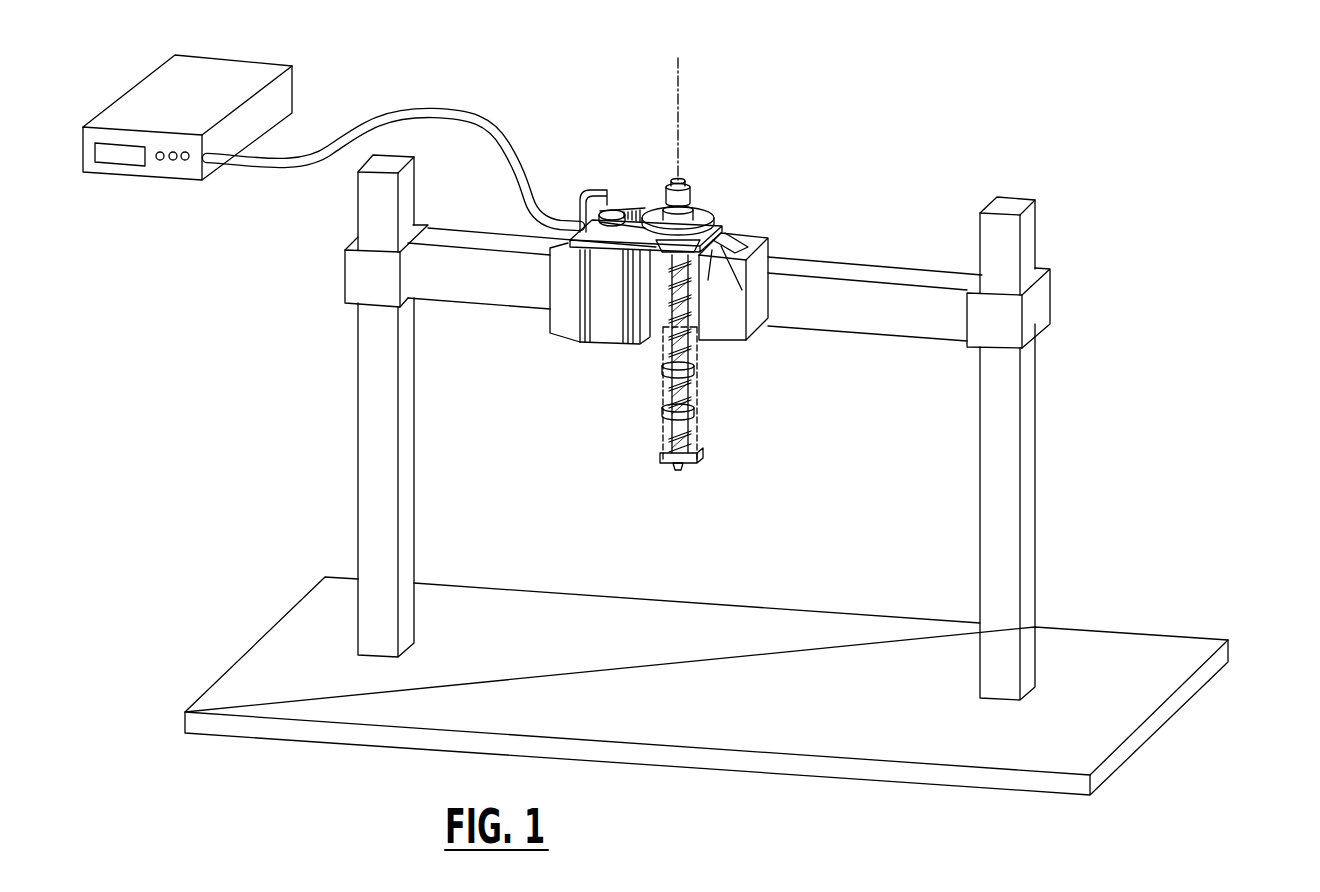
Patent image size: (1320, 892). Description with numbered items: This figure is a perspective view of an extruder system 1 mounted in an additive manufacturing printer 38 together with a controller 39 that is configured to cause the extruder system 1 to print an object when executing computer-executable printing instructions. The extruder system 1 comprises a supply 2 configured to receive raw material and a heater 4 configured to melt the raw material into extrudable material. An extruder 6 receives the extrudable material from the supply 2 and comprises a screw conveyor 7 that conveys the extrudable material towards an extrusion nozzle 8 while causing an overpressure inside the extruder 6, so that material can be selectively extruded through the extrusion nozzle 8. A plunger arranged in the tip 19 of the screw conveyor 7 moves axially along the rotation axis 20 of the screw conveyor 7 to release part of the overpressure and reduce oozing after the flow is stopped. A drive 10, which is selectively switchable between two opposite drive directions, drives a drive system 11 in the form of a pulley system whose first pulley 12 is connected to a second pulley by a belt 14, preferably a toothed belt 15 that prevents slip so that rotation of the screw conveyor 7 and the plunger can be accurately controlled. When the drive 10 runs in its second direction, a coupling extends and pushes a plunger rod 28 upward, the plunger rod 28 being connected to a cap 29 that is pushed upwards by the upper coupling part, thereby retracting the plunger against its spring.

The extruder system 1 is at (689, 295).
The supply 2 is at (721, 260).
The heater 4 is at (663, 352).
The extruder 6 is at (697, 352).
The screw conveyor 7 is at (682, 397).
The extrusion nozzle 8 is at (677, 473).
The drive 10 is at (597, 313).
The drive system 11 is at (620, 200).
The first pulley 12 is at (608, 203).
The belt 14 is at (752, 227).
The toothed belt 15 is at (727, 216).
The tip of the screw conveyor 19 is at (693, 449).
The rotation axis 20 is at (677, 68).
The plunger rod 28 is at (679, 181).
The cap 29 is at (690, 184).
The additive manufacturing printer 38 is at (1195, 201).
The controller 39 is at (255, 72).